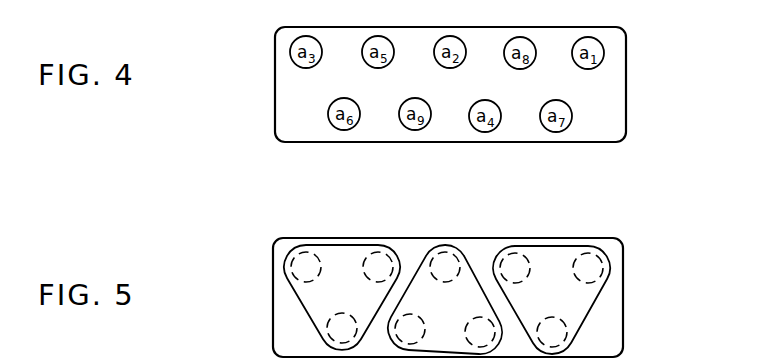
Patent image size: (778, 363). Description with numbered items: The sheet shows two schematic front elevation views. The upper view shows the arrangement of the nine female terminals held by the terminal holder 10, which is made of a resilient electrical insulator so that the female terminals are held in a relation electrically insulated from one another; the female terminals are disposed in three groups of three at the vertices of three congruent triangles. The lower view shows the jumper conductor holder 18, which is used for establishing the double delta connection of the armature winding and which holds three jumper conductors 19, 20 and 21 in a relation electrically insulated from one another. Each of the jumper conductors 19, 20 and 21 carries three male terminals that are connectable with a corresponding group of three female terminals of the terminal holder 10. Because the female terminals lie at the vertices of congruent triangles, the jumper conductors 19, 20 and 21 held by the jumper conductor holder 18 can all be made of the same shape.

In FIG. 4, the terminal holder 10 is at (614, 88).
In FIG. 5, the jumper conductor holder 18 is at (609, 312).
In FIG. 5, the jumper conductor 19 is at (557, 262).
In FIG. 5, the jumper conductor 20 is at (446, 248).
In FIG. 5, the jumper conductor 21 is at (345, 262).